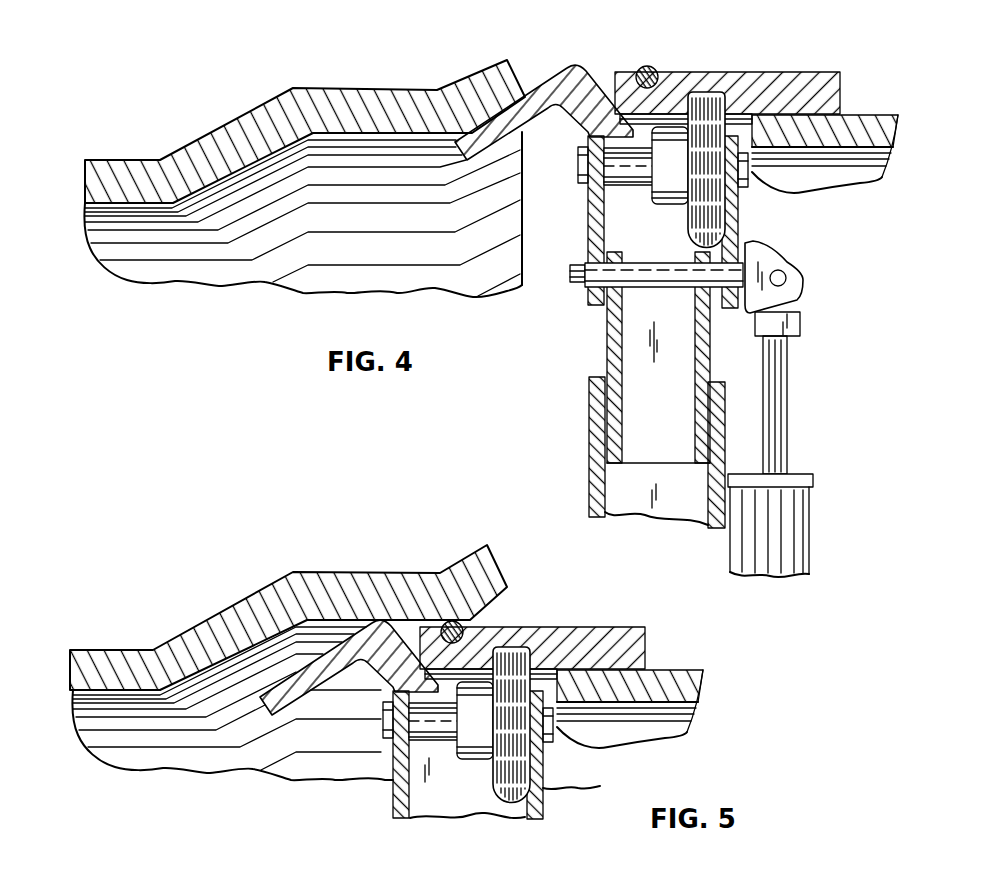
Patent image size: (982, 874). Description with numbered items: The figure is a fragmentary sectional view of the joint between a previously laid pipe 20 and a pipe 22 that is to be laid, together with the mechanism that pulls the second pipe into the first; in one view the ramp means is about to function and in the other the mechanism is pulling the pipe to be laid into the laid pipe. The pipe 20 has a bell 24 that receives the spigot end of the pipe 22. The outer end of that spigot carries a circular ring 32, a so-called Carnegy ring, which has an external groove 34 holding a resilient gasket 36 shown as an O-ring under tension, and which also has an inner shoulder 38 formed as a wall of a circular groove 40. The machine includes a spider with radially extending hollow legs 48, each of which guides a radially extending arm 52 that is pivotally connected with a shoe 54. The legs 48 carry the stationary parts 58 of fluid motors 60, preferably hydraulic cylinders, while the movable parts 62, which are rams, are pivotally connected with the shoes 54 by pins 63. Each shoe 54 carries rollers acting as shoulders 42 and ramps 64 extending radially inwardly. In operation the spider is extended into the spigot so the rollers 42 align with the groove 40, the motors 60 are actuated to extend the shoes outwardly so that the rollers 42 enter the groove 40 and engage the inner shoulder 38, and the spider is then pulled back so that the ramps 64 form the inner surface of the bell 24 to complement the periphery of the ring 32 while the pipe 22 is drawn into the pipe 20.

In FIG. 4, the pipe 20 is at (305, 171).
In FIG. 5, the pipe 20 is at (335, 675).
In FIG. 4, the pipe 22 is at (861, 108).
In FIG. 5, the pipe 22 is at (680, 664).
In FIG. 4, the bell 24 is at (356, 86).
In FIG. 5, the bell 24 is at (358, 573).
In FIG. 4, the circular ring 32 is at (773, 73).
In FIG. 5, the circular ring 32 is at (617, 630).
In FIG. 4, the external groove 34 is at (633, 113).
In FIG. 5, the external groove 34 is at (435, 665).
In FIG. 4, the resilient gasket 36 is at (647, 66).
In FIG. 5, the resilient gasket 36 is at (452, 621).
In FIG. 4, the inner shoulder 38 is at (715, 135).
In FIG. 5, the inner shoulder 38 is at (537, 686).
In FIG. 4, the circular groove 40 is at (700, 91).
In FIG. 5, the circular groove 40 is at (508, 645).
In FIG. 4, the shoulders 42 is at (687, 228).
In FIG. 5, the shoulders 42 is at (492, 783).
In FIG. 4, the hollow legs 48 is at (590, 436).
In FIG. 4, the radially extending arm 52 is at (606, 348).
In FIG. 4, the shoe 54 is at (739, 222).
In FIG. 5, the shoe 54 is at (545, 791).
In FIG. 4, the stationary parts 58 is at (814, 484).
In FIG. 4, the fluid motors 60 is at (810, 532).
In FIG. 4, the movable parts 62 is at (789, 398).
In FIG. 4, the pins 63 is at (805, 265).
In FIG. 4, the ramps 64 is at (578, 67).
In FIG. 5, the ramps 64 is at (300, 673).